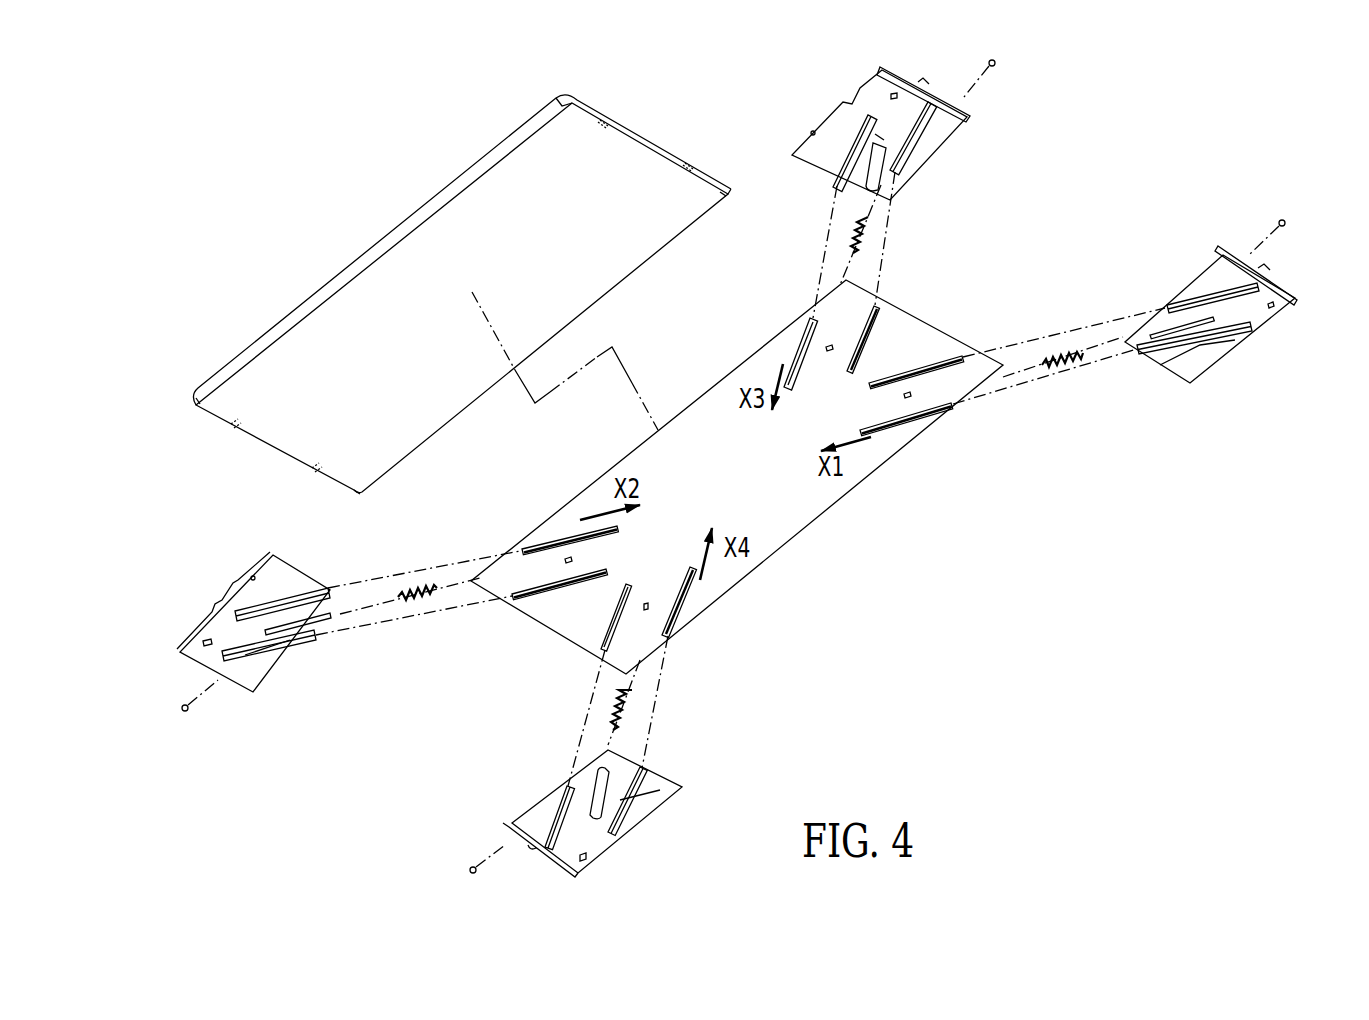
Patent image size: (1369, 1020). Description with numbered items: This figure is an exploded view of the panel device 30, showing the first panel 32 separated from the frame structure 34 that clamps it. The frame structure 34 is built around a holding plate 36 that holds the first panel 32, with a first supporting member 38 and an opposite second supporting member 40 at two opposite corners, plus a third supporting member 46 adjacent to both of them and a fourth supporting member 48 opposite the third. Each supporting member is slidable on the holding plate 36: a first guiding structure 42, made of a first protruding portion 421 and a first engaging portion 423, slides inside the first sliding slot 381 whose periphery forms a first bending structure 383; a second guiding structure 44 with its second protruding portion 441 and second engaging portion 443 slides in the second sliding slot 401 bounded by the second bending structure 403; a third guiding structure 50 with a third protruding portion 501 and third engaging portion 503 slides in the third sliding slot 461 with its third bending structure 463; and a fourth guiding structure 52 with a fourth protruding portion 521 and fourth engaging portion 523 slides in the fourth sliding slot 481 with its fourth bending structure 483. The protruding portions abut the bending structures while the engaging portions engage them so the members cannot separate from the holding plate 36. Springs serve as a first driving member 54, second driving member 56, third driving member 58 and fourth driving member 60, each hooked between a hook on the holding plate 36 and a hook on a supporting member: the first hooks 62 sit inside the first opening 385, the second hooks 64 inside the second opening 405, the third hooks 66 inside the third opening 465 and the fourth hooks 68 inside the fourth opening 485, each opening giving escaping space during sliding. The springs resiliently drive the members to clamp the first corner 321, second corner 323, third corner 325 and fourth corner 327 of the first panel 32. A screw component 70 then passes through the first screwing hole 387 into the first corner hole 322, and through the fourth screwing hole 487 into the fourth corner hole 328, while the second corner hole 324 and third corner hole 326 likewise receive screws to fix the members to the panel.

The panel device 30 is at (300, 150).
The first panel 32 is at (304, 278).
The first corner 321 is at (722, 194).
The first corner hole 322 is at (692, 162).
The second corner 323 is at (193, 392).
The second corner hole 324 is at (232, 428).
The third corner 325 is at (360, 491).
The third corner hole 326 is at (312, 470).
The fourth corner 327 is at (556, 105).
The fourth corner hole 328 is at (606, 124).
The frame structure 34 is at (1078, 170).
The holding plate 36 is at (797, 520).
The first supporting member 38 is at (1190, 302).
The first sliding slot 381 is at (1163, 306).
The first bending structure 383 is at (1200, 342).
The first opening 385 is at (1150, 336).
The first screwing hole 387 is at (1240, 247).
The second supporting member 40 is at (269, 636).
The second sliding slot 401 is at (331, 590).
The second bending structure 403 is at (262, 658).
The second opening 405 is at (326, 615).
The first guiding structure 42 is at (1012, 392).
The first protruding portion 421 is at (918, 400).
The first engaging portion 423 is at (897, 414).
The second guiding structure 44 is at (467, 591).
The second protruding portion 441 is at (531, 602).
The second engaging portion 443 is at (552, 623).
The third supporting member 46 is at (620, 795).
The third sliding slot 461 is at (570, 775).
The third bending structure 463 is at (650, 796).
The third opening 465 is at (599, 812).
The fourth supporting member 48 is at (893, 158).
The fourth sliding slot 481 is at (834, 190).
The fourth bending structure 483 is at (925, 143).
The fourth opening 485 is at (878, 136).
The fourth screwing hole 487 is at (958, 98).
The third guiding structure 50 is at (668, 676).
The third protruding portion 501 is at (674, 604).
The third engaging portion 503 is at (692, 582).
The fourth guiding structure 52 is at (844, 281).
The fourth protruding portion 521 is at (848, 314).
The fourth engaging portion 523 is at (854, 336).
The first driving member 54 is at (1057, 354).
The second driving member 56 is at (432, 588).
The third driving member 58 is at (633, 700).
The fourth driving member 60 is at (852, 252).
The first hook 62 is at (902, 396).
The second hook 64 is at (572, 561).
The third hook 66 is at (647, 603).
The fourth hook 68 is at (890, 96).
The screw component 70 is at (997, 66).